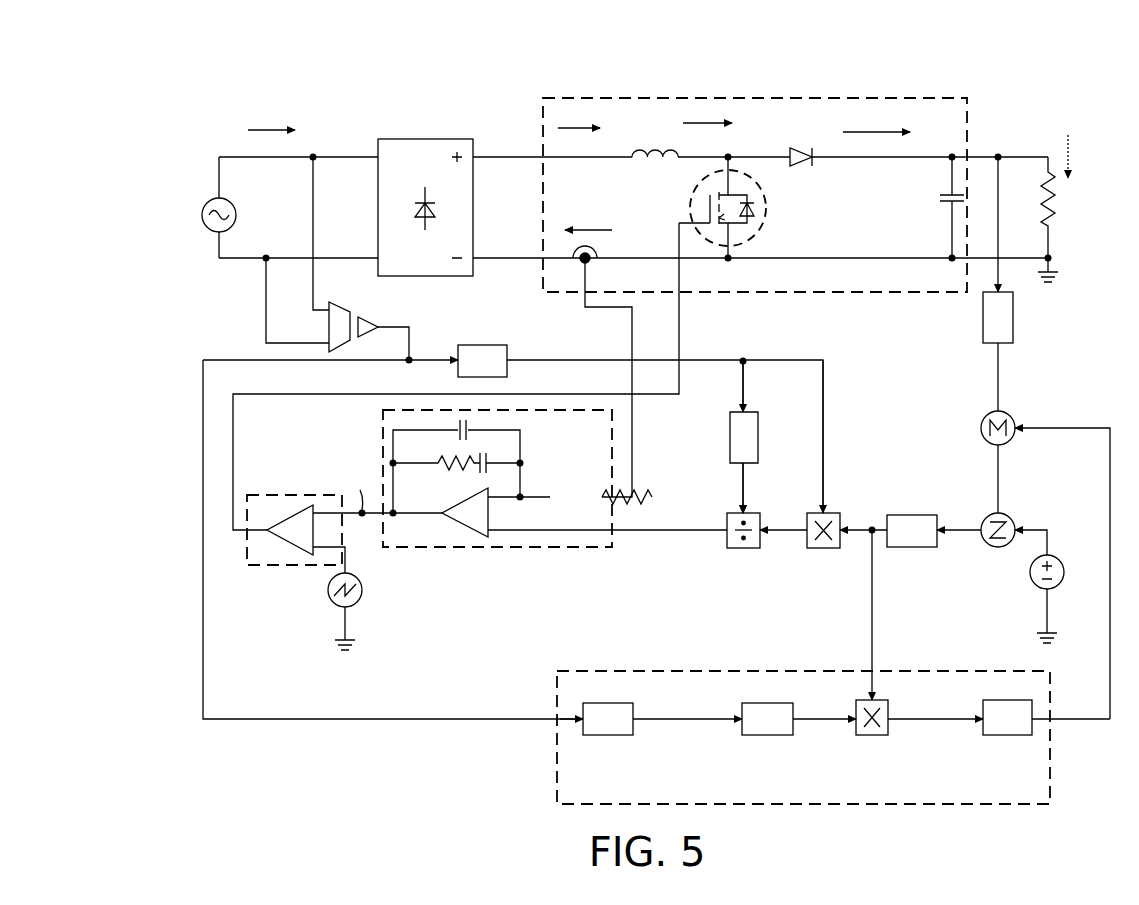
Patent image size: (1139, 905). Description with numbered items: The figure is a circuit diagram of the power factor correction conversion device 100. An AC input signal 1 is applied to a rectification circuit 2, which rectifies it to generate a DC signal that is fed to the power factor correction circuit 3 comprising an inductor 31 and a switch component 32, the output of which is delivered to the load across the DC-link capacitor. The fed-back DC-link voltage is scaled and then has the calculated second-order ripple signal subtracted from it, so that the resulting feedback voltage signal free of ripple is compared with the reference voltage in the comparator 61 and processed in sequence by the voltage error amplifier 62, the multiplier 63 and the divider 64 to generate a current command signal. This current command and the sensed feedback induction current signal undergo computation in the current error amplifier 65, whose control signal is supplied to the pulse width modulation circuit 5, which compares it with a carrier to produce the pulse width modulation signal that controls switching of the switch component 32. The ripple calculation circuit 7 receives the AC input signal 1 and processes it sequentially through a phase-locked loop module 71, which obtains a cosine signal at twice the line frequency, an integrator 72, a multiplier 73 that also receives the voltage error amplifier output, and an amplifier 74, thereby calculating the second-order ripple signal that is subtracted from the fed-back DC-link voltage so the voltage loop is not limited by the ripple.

The power factor correction conversion device 100 is at (84, 79).
The AC input signal 1 is at (207, 206).
The rectification circuit 2 is at (430, 139).
The power factor correction circuit 3 is at (747, 98).
The inductor 31 is at (668, 165).
The switch component 32 is at (765, 210).
The pulse width modulation circuit 5 is at (272, 567).
The comparator 61 is at (994, 548).
The voltage error amplifier 62 is at (912, 548).
The multiplier 63 is at (823, 548).
The divider 64 is at (743, 548).
The current error amplifier 65 is at (475, 556).
The ripple calculation circuit 7 is at (1050, 765).
The phase-locked loop module 71 is at (605, 735).
The integrator 72 is at (768, 735).
The multiplier 73 is at (870, 735).
The amplifier 74 is at (1005, 735).